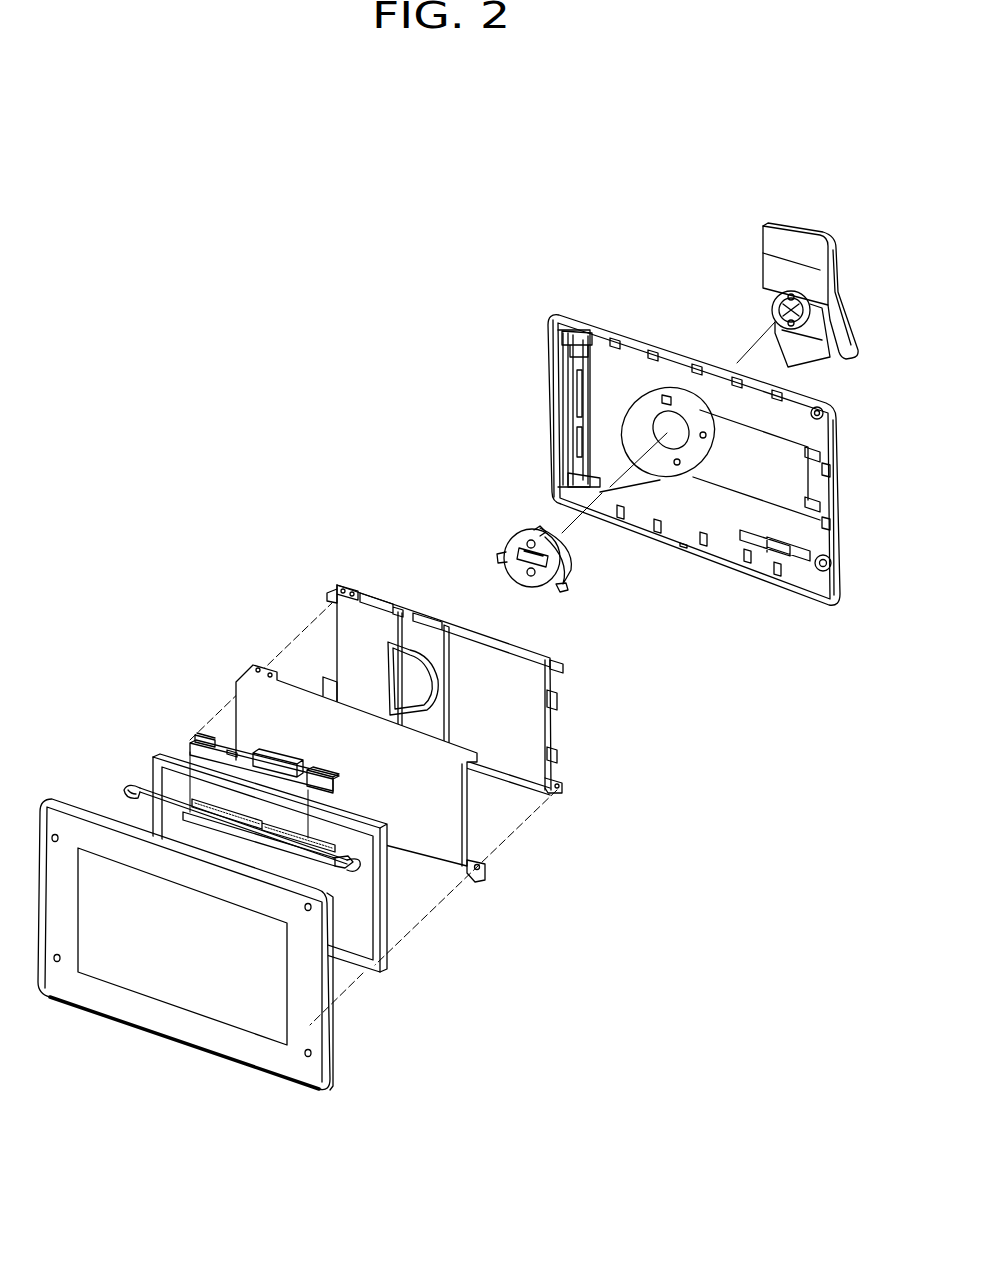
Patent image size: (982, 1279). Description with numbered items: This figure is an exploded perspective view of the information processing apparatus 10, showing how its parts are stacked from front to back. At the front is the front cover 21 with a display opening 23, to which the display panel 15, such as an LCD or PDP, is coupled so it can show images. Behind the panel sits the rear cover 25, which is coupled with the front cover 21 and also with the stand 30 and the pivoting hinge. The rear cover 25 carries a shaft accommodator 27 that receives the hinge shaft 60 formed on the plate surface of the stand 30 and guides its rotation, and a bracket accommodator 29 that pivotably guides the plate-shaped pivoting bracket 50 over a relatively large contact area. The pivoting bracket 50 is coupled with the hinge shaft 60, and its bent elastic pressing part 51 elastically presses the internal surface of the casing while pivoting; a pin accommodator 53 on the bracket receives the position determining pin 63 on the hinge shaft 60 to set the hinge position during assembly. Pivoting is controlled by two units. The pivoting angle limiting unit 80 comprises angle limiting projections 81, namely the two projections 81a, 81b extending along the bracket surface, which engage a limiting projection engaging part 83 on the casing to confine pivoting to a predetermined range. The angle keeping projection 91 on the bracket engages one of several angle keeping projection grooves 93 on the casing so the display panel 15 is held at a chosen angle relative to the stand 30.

The information processing apparatus 10 is at (246, 301).
The display panel 15 is at (385, 968).
The front cover 21 is at (200, 950).
The display opening 23 is at (180, 1010).
The rear cover 25 is at (661, 442).
The shaft accommodator 27 is at (647, 417).
The bracket accommodator 29 is at (683, 410).
The stand 30 is at (783, 265).
The pivoting bracket 50 is at (561, 534).
The elastic pressing part 51 is at (565, 585).
The pin accommodator 53 is at (552, 577).
The hinge shaft 60 is at (770, 290).
The position determining pin 63 is at (775, 330).
The pivoting angle limiting unit 80 is at (554, 483).
The angle limiting projections 81 is at (500, 506).
The angle limiting projection 81a is at (498, 558).
The angle limiting projection 81b is at (535, 530).
The limiting projection engaging part 83 is at (655, 401).
The angle keeping projection 91 is at (573, 565).
The angle keeping projection grooves 93 is at (710, 440).